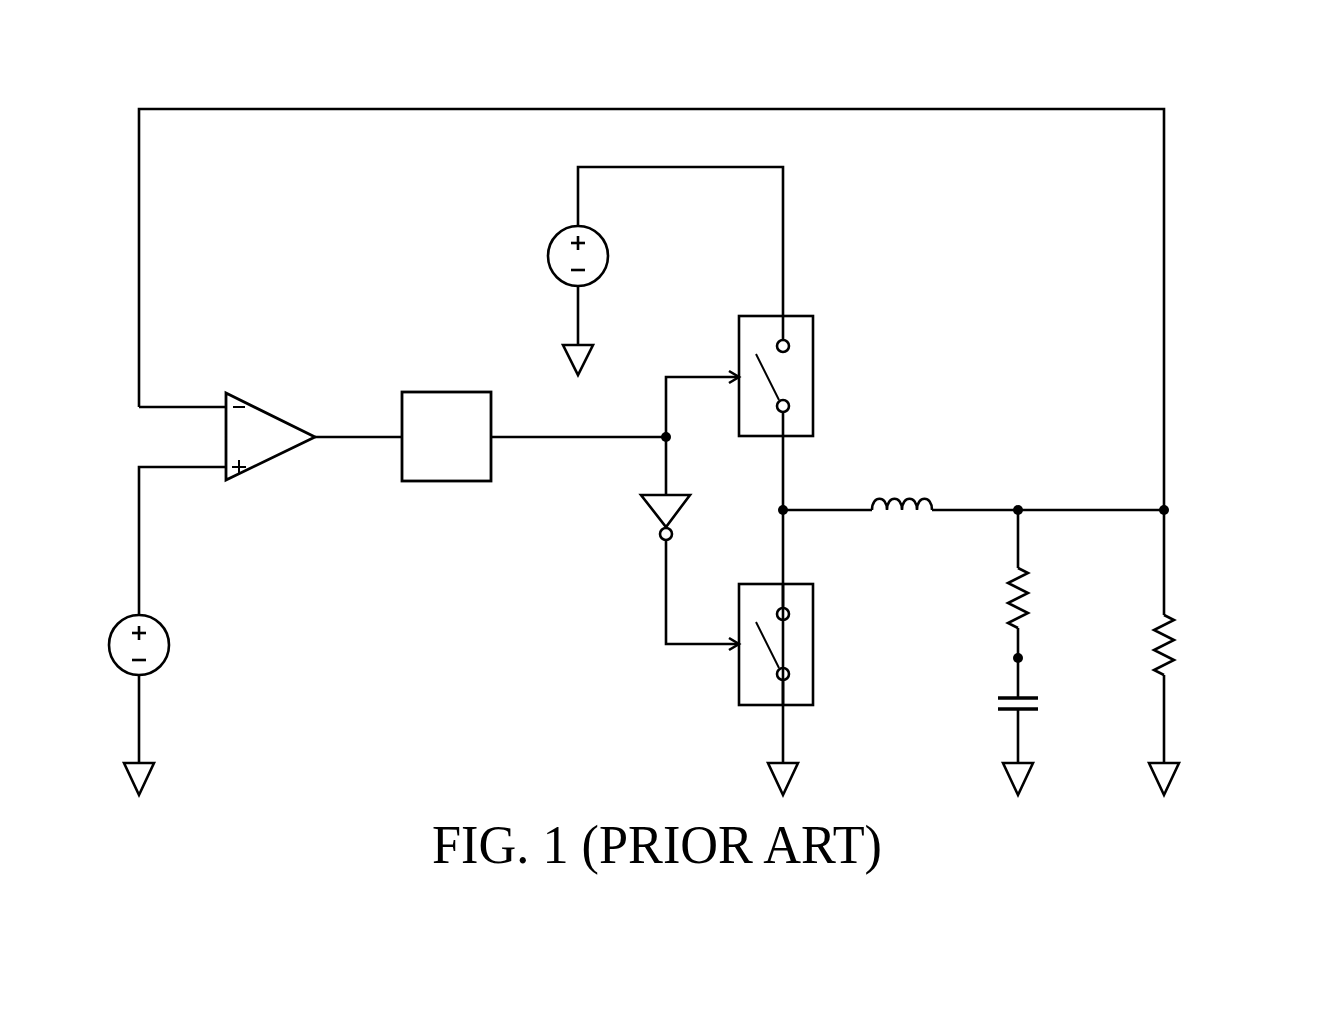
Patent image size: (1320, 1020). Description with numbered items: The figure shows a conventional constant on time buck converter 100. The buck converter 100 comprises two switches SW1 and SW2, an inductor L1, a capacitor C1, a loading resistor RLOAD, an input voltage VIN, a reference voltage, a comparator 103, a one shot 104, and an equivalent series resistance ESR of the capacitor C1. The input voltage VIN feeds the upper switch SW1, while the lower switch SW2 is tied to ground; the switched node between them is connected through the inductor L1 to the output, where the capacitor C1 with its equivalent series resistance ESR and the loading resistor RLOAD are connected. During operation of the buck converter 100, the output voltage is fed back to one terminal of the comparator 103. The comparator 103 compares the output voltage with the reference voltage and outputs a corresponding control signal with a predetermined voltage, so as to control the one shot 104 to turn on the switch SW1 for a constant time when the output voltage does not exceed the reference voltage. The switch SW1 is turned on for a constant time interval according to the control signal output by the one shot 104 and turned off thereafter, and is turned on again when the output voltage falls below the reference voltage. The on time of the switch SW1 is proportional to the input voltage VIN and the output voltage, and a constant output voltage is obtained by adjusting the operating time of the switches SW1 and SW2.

The constant on time buck converter 100 is at (131, 78).
The comparator 103 is at (270, 412).
The one shot 104 is at (448, 392).
The input voltage VIN is at (608, 257).
The switch SW1 is at (813, 377).
The switch SW2 is at (813, 644).
The inductor L1 is at (900, 515).
The equivalent series resistance ESR is at (1030, 604).
The capacitor C1 is at (1040, 705).
The loading resistor RLOAD is at (1176, 650).